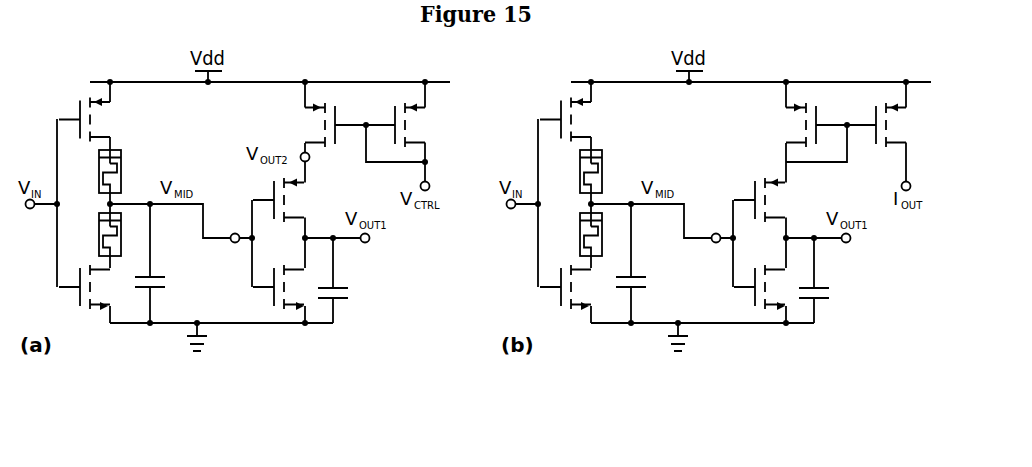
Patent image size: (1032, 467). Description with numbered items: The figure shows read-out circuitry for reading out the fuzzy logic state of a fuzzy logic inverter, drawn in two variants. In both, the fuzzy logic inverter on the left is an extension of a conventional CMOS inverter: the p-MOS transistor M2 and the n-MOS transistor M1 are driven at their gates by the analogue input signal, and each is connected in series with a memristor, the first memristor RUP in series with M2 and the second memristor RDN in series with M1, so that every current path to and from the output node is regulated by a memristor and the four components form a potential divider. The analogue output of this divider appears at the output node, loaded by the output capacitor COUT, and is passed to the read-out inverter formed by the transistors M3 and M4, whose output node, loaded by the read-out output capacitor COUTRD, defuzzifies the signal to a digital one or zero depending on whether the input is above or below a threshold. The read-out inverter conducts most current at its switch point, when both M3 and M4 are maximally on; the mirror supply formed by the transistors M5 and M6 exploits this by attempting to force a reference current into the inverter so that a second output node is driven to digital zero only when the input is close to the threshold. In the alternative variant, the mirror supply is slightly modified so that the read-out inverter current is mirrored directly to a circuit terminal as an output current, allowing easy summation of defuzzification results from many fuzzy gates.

The n-MOS transistor M1 is at (333, 287).
The p-MOS transistor M2 is at (333, 120).
The read-out inverter transistor M3 is at (519, 274).
The read-out inverter transistor M4 is at (529, 200).
The mirror supply transistor M5 is at (561, 125).
The mirror supply M6 is at (651, 125).
The first memristor RUP is at (333, 171).
The second memristor RDN is at (333, 234).
The output capacitor COUT is at (406, 269).
The read-out output capacitor COUTRD is at (599, 277).